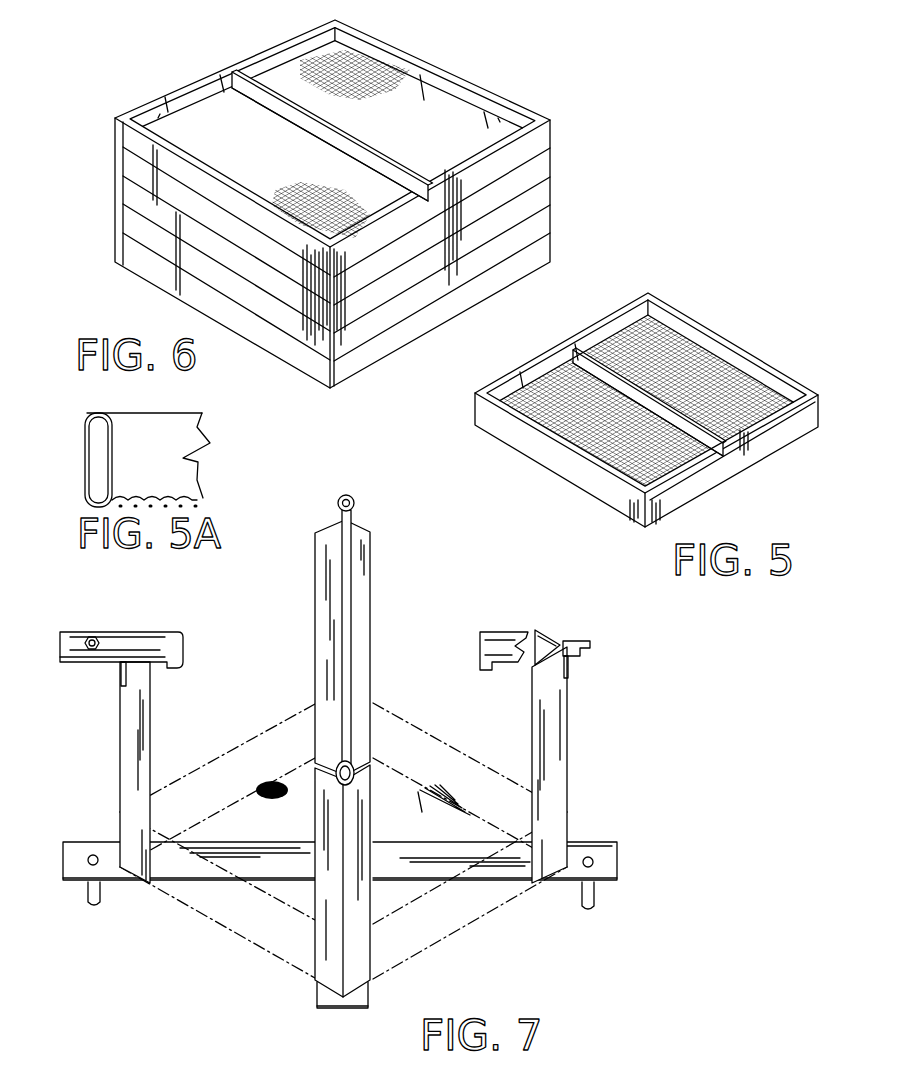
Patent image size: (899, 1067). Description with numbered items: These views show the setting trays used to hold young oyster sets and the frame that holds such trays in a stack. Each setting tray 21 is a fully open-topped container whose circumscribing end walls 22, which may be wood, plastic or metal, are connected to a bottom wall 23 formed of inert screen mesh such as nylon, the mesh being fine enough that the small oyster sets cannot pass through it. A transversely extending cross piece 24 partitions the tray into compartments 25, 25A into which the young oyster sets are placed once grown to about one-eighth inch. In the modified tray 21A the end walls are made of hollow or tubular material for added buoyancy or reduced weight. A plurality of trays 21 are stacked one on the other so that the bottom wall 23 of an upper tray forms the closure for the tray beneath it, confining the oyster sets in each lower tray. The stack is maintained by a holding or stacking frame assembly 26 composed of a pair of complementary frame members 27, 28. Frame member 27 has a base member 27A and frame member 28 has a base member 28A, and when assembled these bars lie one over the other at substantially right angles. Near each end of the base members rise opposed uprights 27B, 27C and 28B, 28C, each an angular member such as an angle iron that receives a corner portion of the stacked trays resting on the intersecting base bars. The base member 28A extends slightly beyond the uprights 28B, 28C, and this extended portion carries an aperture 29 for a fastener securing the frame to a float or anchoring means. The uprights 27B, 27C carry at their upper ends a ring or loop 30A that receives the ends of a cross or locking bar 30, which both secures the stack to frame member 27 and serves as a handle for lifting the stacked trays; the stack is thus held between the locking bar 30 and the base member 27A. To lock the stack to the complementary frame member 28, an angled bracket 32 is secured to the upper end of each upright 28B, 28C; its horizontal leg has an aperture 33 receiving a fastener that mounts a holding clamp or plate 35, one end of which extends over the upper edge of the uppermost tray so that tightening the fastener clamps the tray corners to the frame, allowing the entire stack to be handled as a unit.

In FIG. 6, the setting tray 21 is at (528, 98).
In FIG. 5, the setting tray 21 is at (727, 312).
In FIG. 5A, the modified tray 21A is at (208, 467).
In FIG. 6, the circumscribing end walls 22 is at (477, 100).
In FIG. 5, the circumscribing end walls 22 is at (760, 447).
In FIG. 6, the bottom wall 23 is at (350, 45).
In FIG. 5, the bottom wall 23 is at (727, 383).
In FIG. 6, the cross piece 24 is at (397, 160).
In FIG. 5, the cross piece 24 is at (603, 350).
In FIG. 6, the compartment 25 is at (422, 103).
In FIG. 5, the compartment 25 is at (673, 333).
In FIG. 6, the compartment 25A is at (213, 120).
In FIG. 5, the compartment 25A is at (563, 377).
In FIG. 7, the stacking frame assembly 26 is at (397, 585).
In FIG. 7, the frame member 27 is at (346, 763).
In FIG. 7, the base member 27A is at (316, 800).
In FIG. 7, the upright 27B is at (325, 950).
In FIG. 7, the upright 27C is at (372, 557).
In FIG. 7, the frame member 28 is at (497, 883).
In FIG. 7, the base member 28A is at (573, 850).
In FIG. 7, the upright 28B is at (532, 770).
In FIG. 7, the upright 28C is at (148, 752).
In FIG. 7, the aperture 29 is at (88, 858).
In FIG. 7, the cross or locking bar 30 is at (350, 629).
In FIG. 7, the ring or loop 30A is at (350, 497).
In FIG. 7, the angled bracket 32 is at (123, 660).
In FIG. 7, the aperture 33 is at (580, 647).
In FIG. 7, the holding clamp or plate 35 is at (155, 637).